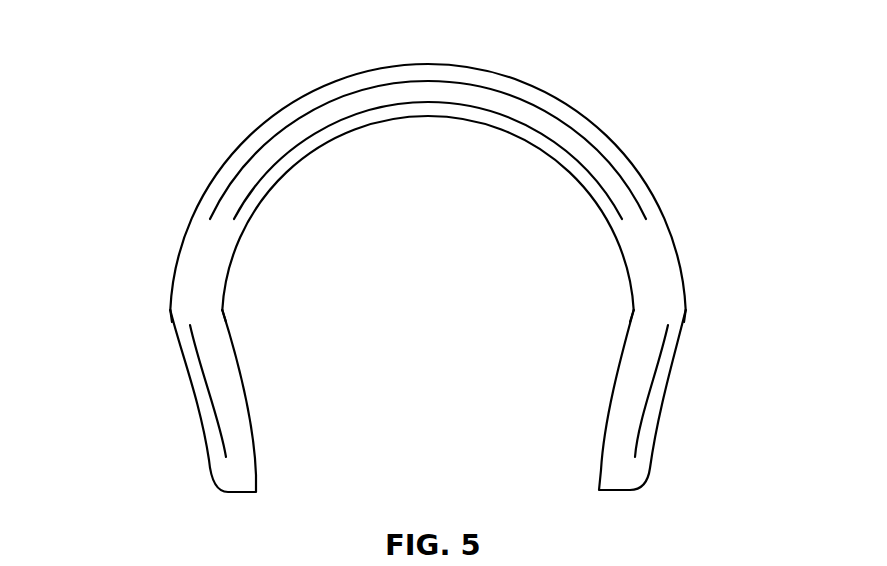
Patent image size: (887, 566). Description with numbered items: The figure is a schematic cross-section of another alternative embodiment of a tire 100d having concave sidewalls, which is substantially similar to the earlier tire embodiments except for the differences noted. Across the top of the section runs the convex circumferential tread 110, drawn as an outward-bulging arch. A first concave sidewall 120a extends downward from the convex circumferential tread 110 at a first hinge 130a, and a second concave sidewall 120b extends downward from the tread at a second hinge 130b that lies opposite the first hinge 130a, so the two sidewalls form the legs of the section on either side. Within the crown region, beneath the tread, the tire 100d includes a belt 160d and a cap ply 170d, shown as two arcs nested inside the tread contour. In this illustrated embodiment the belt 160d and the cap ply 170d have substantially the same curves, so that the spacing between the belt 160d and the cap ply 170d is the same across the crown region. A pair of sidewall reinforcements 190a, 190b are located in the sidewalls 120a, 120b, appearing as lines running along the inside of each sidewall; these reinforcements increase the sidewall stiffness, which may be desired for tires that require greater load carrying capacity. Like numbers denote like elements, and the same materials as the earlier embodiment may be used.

The tire 100d is at (143, 56).
The convex circumferential tread 110 is at (510, 75).
The cap ply 170d is at (580, 137).
The belt 160d is at (618, 203).
The first hinge 130a is at (223, 309).
The first concave sidewall 120a is at (234, 388).
The sidewall reinforcement 190a is at (196, 346).
The second hinge 130b is at (634, 311).
The second concave sidewall 120b is at (625, 395).
The sidewall reinforcement 190b is at (641, 413).